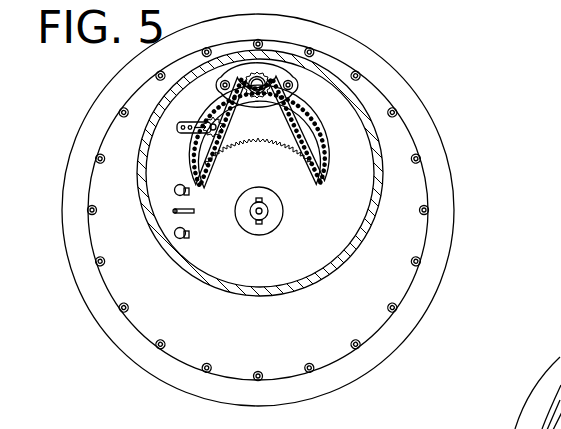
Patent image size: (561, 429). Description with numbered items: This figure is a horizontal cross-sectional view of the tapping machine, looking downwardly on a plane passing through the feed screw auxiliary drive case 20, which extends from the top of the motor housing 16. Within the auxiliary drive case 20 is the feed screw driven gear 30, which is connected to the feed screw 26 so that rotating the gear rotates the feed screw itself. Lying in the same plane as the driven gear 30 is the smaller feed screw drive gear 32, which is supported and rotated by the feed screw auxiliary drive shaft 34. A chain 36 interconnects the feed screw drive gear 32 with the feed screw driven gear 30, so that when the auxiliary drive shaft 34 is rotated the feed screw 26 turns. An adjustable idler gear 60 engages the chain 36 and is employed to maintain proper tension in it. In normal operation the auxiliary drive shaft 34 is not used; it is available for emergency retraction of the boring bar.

The motor housing 16 is at (430, 241).
The feed screw auxiliary drive case 20 is at (377, 142).
The feed screw 26 is at (262, 211).
The feed screw driven gear 30 is at (272, 256).
The feed screw drive gear 32 is at (272, 83).
The feed screw auxiliary drive shaft 34 is at (259, 97).
The chain 36 is at (300, 127).
The adjustable idler gear 60 is at (210, 117).